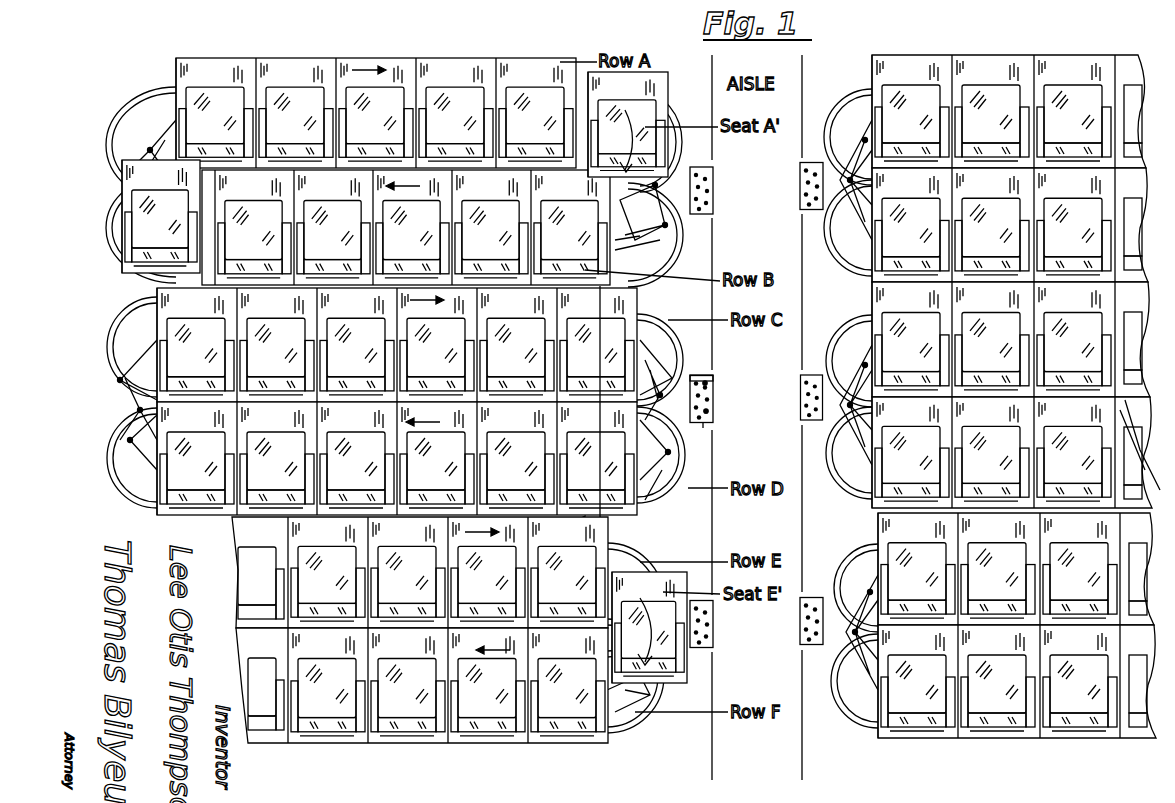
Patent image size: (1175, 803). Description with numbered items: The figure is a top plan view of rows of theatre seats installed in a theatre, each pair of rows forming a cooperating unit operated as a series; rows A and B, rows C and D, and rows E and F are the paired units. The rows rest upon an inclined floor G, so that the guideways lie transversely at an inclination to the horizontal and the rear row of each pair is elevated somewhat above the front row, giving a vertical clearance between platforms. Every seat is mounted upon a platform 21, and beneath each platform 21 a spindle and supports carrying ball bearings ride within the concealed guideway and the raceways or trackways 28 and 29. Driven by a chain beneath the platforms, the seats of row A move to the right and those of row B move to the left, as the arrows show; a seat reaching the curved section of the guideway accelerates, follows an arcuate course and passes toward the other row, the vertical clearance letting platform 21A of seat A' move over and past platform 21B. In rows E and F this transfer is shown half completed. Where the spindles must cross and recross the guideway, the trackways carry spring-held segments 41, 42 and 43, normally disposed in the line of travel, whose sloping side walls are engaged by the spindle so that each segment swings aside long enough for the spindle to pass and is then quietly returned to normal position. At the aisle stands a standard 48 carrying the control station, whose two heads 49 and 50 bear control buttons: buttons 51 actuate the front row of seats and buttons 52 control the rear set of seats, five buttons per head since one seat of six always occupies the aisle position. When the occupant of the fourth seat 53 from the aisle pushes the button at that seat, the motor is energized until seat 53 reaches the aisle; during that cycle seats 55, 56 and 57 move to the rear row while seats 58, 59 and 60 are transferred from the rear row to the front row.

The platform 21 is at (518, 72).
The platform of seat A' 21A is at (656, 84).
The platform of seat B' 21B is at (366, 222).
The raceway or trackway 28 is at (645, 318).
The raceway or trackway 29 is at (652, 497).
The segment 41 is at (650, 398).
The segment 42 is at (650, 384).
The segment 43 is at (655, 440).
The standard 48 is at (718, 396).
The control head 49 is at (715, 383).
The control head 50 is at (710, 410).
The control buttons for front row 51 is at (710, 375).
The control buttons for rear row 52 is at (703, 428).
The fourth seat 53 is at (352, 347).
The seat 55 is at (433, 332).
The seat 56 is at (510, 330).
The seat 57 is at (590, 338).
The seat 58 is at (190, 445).
The seat 59 is at (262, 445).
The seat 60 is at (352, 440).
The inclined floor G is at (705, 230).